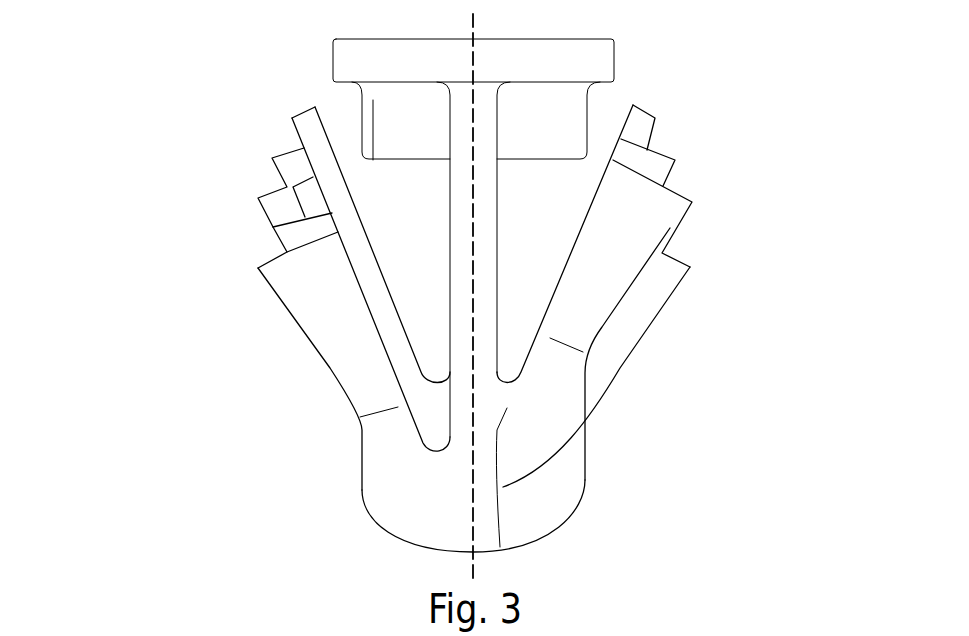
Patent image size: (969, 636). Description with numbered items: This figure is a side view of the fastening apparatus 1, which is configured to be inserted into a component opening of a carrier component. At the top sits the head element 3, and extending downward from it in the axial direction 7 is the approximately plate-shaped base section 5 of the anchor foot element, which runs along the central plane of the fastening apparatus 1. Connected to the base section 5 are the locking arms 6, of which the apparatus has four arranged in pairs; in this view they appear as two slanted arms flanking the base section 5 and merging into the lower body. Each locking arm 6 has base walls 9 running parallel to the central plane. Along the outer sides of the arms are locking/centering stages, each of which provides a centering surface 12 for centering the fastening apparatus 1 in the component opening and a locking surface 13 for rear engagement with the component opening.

The fastening apparatus 1 is at (140, 72).
The head element 3 is at (497, 55).
The base section 5 is at (457, 193).
The locking arms 6 is at (328, 328).
The axial direction 7 is at (473, 563).
The base walls 9 is at (377, 316).
The centering surface 12 is at (646, 133).
The locking surface 13 is at (301, 107).